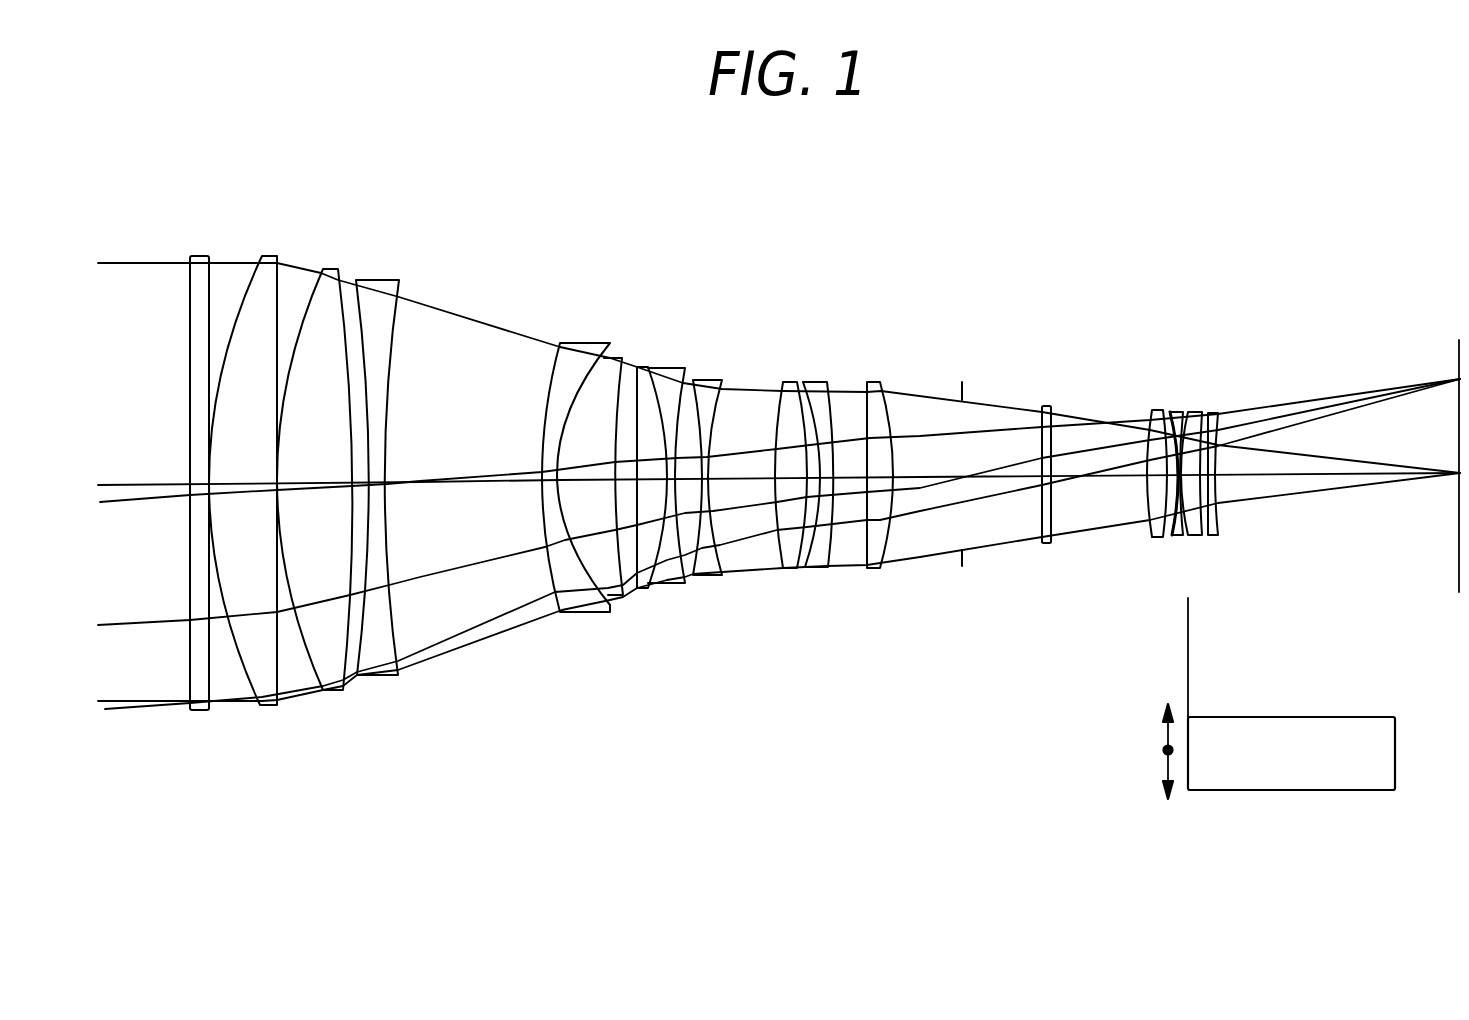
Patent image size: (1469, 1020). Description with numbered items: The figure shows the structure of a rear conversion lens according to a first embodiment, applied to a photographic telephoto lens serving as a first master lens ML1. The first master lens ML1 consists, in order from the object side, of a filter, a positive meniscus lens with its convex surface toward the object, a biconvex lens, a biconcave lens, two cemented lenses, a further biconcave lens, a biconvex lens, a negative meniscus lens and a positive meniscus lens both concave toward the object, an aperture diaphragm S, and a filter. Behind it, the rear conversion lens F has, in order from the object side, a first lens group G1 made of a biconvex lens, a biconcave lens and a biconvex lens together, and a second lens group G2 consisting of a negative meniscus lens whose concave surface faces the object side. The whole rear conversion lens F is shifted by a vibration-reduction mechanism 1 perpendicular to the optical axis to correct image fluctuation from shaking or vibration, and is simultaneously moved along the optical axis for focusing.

The vibration-reduction mechanism 1 is at (1335, 790).
The first master lens ML1 is at (180, 736).
The aperture diaphragm S is at (962, 453).
The rear conversion lens F is at (1211, 345).
The first lens group G1 is at (1203, 407).
The second lens group G2 is at (1218, 440).